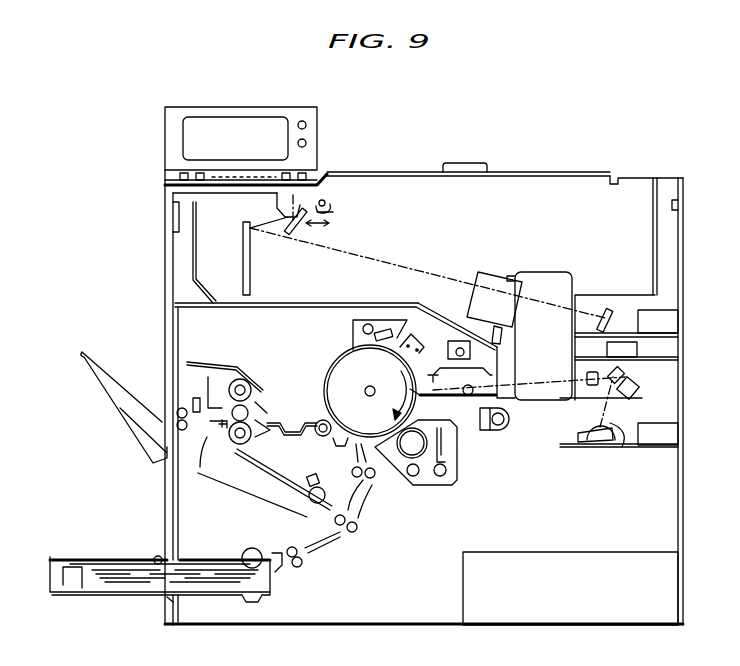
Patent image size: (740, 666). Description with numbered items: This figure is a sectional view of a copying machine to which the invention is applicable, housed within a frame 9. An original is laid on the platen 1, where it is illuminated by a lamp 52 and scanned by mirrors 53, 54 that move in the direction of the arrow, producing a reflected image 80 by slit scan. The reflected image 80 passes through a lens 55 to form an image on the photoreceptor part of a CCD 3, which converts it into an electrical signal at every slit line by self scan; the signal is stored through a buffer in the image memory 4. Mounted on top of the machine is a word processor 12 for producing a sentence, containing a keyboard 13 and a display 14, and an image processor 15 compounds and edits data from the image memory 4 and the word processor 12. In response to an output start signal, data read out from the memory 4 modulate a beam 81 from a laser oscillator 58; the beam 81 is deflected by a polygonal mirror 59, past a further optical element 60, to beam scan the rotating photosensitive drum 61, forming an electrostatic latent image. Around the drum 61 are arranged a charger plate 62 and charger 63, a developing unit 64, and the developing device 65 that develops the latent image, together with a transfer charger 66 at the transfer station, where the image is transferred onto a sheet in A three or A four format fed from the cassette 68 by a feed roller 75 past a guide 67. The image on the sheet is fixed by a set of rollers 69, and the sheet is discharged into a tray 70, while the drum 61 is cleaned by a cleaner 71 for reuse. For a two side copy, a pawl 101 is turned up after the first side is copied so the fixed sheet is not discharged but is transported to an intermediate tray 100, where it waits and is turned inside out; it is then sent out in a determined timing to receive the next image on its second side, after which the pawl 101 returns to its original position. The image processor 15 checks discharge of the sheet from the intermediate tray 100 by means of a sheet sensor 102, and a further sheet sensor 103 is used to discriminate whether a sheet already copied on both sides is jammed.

The platen 1 is at (355, 172).
The CCD 3 is at (607, 310).
The image memory 4 is at (665, 322).
The machine frame 9 is at (597, 174).
The word processor 12 is at (283, 107).
The keyboard 13 is at (182, 175).
The display 14 is at (244, 153).
The image processor 15 is at (628, 342).
The lamp 52 is at (332, 209).
The mirror 53 is at (305, 228).
The mirror 54 is at (243, 226).
The lens 55 is at (492, 282).
The laser oscillator 58 is at (622, 428).
The polygonal mirror 59 is at (628, 372).
The lens 60 is at (592, 386).
The photosensitive drum 61 is at (358, 390).
The charger plate 62 is at (410, 332).
The charger 63 is at (433, 382).
The developing unit 64 is at (468, 397).
The developing device 65 is at (408, 452).
The transfer charger 66 is at (503, 426).
The paper guide 67 is at (340, 446).
The cassette 68 is at (108, 597).
The set of rollers 69 is at (255, 430).
The tray 70 is at (103, 370).
The cleaner 71 is at (380, 330).
The paper feed roller 75 is at (243, 554).
The reflected image 80 is at (562, 310).
The beam 81 is at (560, 378).
The intermediate tray 100 is at (250, 490).
The pawl 101 is at (220, 407).
The sheet sensor 102 is at (312, 477).
The sheet sensor 103 is at (197, 397).